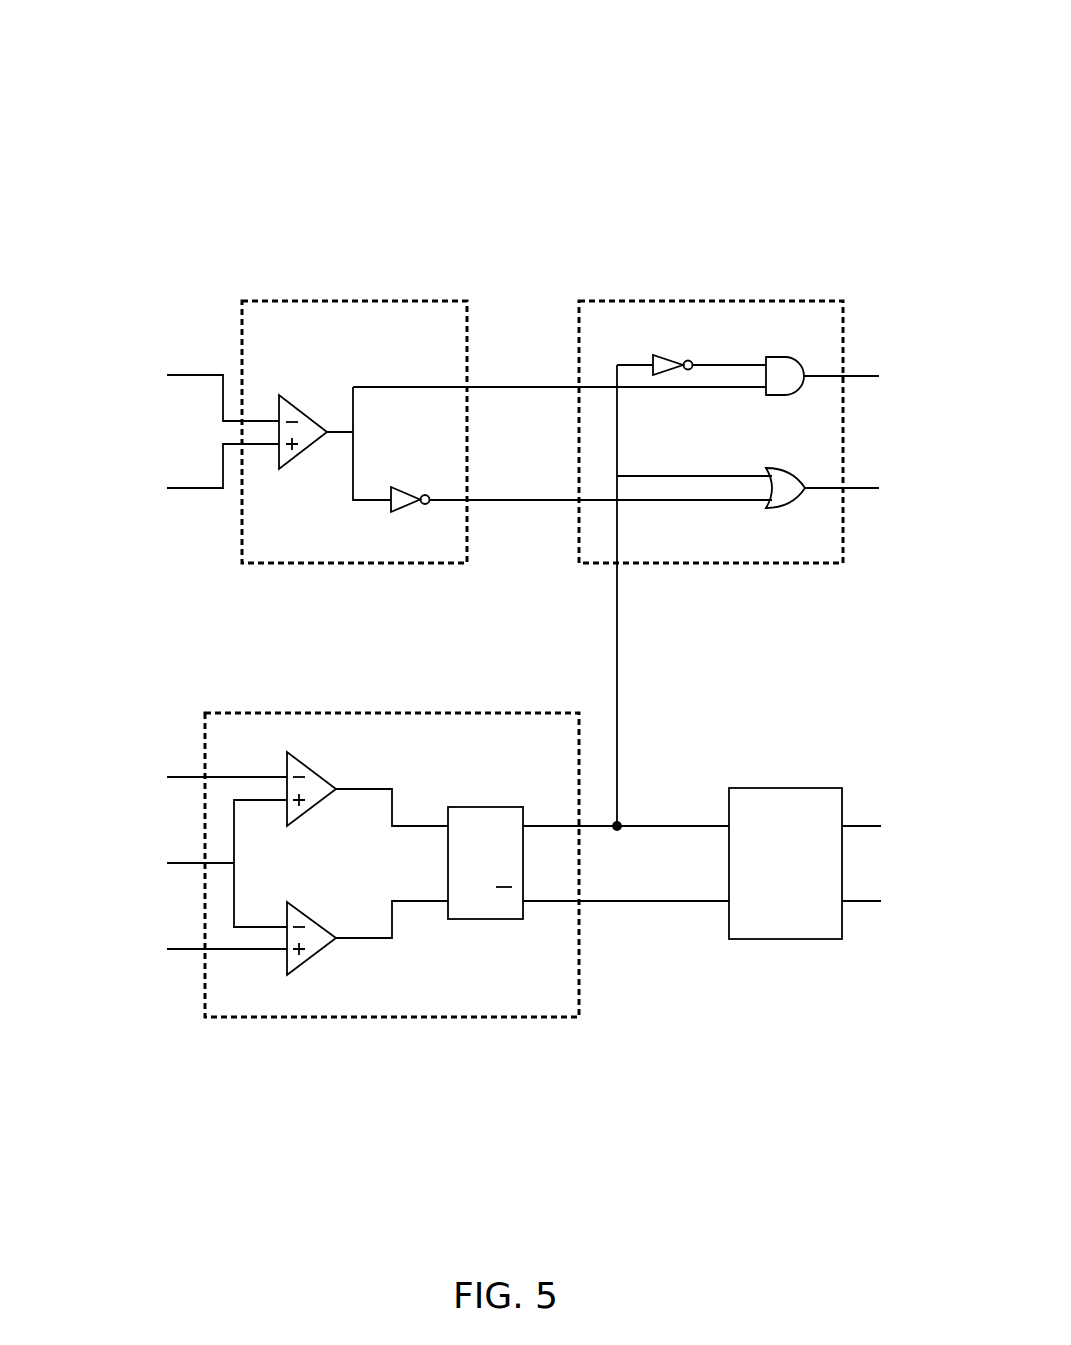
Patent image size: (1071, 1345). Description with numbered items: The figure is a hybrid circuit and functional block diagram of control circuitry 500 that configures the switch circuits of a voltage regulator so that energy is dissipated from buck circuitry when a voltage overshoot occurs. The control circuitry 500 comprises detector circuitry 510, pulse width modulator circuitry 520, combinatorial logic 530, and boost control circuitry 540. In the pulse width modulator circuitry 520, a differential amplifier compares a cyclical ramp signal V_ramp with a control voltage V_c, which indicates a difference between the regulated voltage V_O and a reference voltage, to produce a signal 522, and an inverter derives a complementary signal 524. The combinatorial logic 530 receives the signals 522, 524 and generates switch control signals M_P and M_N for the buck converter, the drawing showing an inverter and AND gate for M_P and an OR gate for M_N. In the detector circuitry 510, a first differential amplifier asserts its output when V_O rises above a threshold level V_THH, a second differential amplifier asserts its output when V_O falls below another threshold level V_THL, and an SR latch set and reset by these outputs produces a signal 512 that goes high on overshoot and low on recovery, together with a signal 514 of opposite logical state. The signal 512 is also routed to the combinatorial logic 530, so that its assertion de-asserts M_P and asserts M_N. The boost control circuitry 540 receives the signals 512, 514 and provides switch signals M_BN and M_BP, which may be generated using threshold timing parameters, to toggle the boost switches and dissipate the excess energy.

The control circuitry 500 is at (122, 82).
The detector circuitry 510 is at (505, 713).
The signal 512 is at (709, 827).
The signal 514 is at (709, 902).
The pulse width modulator circuitry 520 is at (392, 301).
The signal 522 is at (485, 387).
The signal 524 is at (485, 500).
The combinatorial logic 530 is at (765, 301).
The boost control circuitry 540 is at (808, 876).